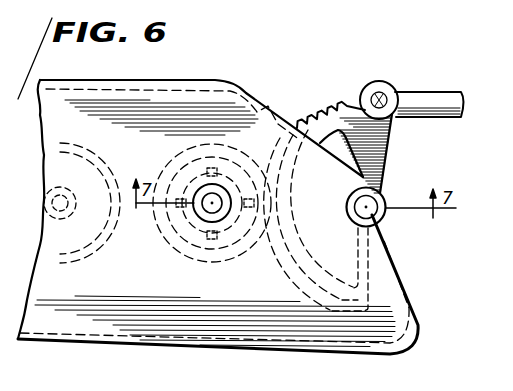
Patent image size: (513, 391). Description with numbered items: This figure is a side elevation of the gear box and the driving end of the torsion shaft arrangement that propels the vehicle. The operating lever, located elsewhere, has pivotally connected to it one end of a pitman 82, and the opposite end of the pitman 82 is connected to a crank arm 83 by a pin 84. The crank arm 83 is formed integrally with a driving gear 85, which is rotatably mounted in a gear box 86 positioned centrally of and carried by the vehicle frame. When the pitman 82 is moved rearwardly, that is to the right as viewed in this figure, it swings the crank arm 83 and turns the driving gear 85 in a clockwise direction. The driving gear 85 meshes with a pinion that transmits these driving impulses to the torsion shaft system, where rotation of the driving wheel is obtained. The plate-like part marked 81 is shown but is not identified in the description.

The supporting plate 81 is at (268, 104).
The pitman 82 is at (437, 97).
The crank arm 83 is at (383, 135).
The pin 84 is at (382, 100).
The driving gear 85 is at (335, 108).
The gear box 86 is at (383, 288).